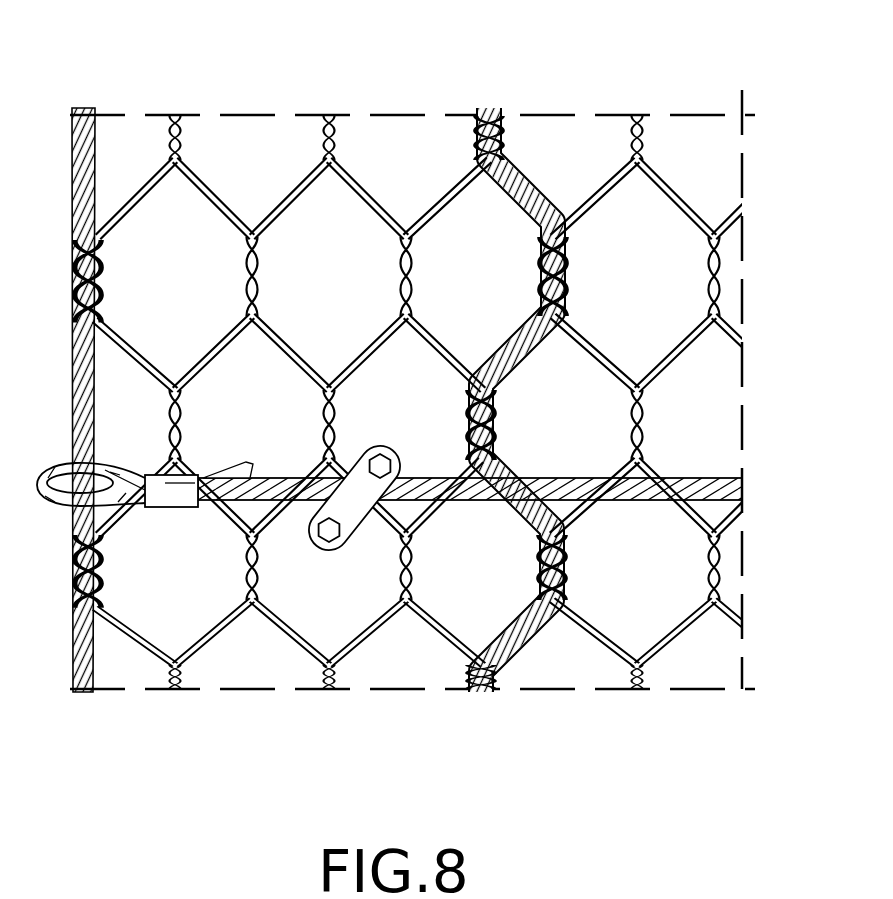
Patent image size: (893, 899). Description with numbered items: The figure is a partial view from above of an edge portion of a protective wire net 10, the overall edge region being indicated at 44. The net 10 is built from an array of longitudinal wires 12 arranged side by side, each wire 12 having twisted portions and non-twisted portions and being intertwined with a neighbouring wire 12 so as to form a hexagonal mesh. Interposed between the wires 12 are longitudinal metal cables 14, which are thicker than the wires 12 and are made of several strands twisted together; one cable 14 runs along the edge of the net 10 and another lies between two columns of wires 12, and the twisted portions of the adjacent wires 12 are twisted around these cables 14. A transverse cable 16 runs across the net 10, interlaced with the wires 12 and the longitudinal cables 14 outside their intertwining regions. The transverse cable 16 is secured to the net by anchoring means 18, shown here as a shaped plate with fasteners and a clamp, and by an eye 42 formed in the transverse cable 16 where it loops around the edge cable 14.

The protective wire net 10 is at (442, 703).
The longitudinal wires 12 is at (287, 203).
The longitudinal metal cables 14 is at (96, 169).
The transverse cables 16 is at (637, 500).
The anchoring means 18 is at (383, 462).
The eyes 42 is at (120, 465).
The protective net 44 is at (152, 86).